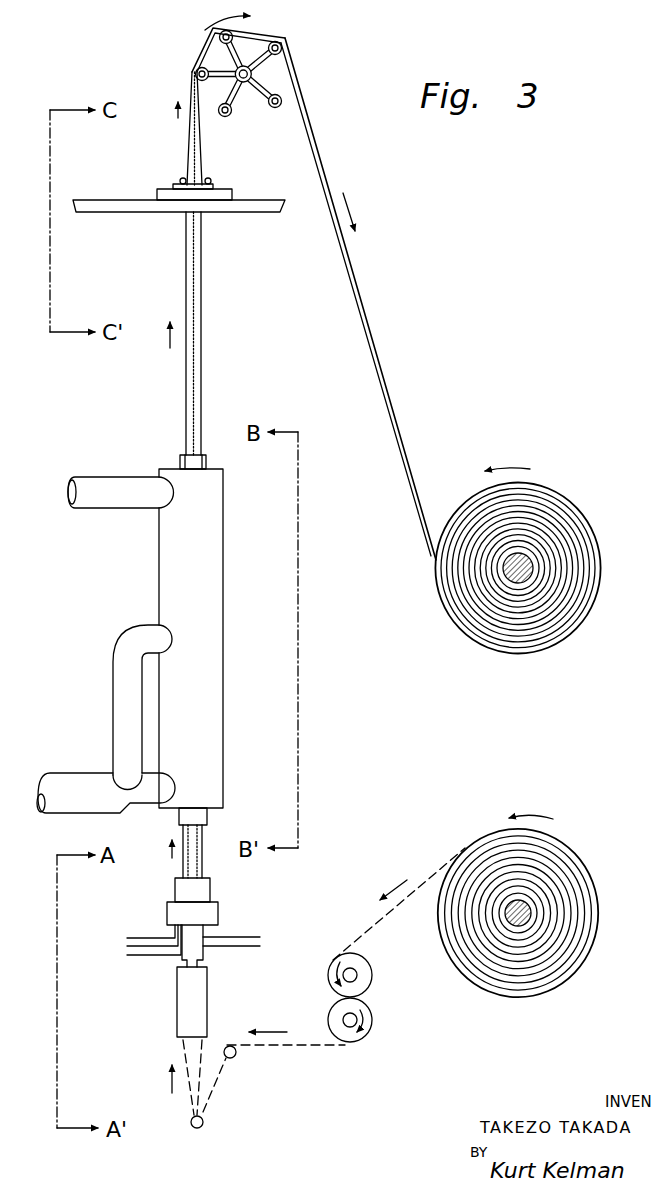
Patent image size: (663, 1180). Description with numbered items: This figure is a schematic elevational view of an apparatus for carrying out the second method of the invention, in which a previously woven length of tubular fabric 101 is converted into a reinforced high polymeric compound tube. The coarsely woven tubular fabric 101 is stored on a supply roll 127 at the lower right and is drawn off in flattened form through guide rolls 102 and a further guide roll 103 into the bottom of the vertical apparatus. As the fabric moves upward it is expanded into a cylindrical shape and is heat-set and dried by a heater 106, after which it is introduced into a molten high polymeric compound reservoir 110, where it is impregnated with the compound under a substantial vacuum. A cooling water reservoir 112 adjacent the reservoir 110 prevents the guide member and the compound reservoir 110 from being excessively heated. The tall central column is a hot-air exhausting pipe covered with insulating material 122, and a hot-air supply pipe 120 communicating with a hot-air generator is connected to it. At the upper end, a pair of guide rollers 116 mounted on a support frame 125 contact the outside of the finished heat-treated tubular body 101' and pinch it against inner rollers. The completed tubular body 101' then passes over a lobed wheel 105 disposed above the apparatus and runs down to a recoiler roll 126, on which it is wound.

The lobed wheel 105 is at (253, 72).
The guide rollers 116 is at (181, 180).
The support frame 125 is at (258, 205).
The heat-treated tubular body 101' is at (230, 270).
The insulating material 122 is at (167, 537).
The hot-air supply pipe 120 is at (77, 787).
The molten high polymeric compound reservoir 110 is at (210, 885).
The cooling water reservoir 112 is at (210, 913).
The heater 106 is at (203, 1002).
The tubular fabric 101 is at (324, 987).
The guide roll 103 is at (233, 1057).
The guide rolls 102 is at (372, 980).
The recoiler roll 126 is at (530, 563).
The supply roll 127 is at (533, 913).